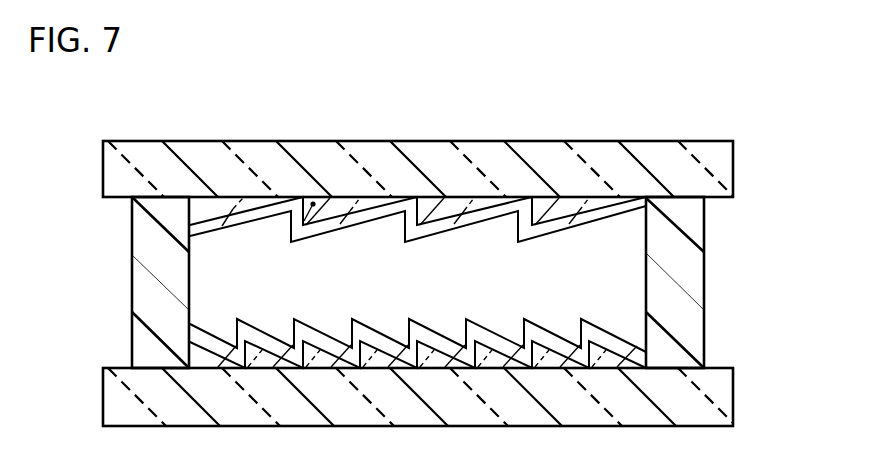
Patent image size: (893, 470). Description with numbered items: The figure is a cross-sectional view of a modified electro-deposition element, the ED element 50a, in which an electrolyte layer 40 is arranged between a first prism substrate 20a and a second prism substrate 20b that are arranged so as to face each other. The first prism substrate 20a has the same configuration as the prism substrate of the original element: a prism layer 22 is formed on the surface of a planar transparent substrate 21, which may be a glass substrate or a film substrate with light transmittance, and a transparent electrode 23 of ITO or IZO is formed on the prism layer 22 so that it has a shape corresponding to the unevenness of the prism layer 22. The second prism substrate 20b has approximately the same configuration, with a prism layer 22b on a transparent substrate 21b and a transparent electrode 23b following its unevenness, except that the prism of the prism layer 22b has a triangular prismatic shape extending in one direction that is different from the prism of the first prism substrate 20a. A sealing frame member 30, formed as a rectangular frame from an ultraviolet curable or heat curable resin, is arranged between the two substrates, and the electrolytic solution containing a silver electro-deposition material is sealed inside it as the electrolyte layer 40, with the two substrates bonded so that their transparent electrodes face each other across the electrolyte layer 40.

The first prism substrate 20a is at (473, 359).
The second prism substrate 20b is at (474, 178).
The transparent substrate 21 is at (454, 390).
The transparent substrate 21b is at (461, 161).
The prism layer 22 is at (418, 327).
The prism layer 22b is at (418, 234).
The transparent electrode 23 is at (418, 330).
The transparent electrode 23b is at (418, 234).
The sealing frame member 30 is at (417, 282).
The electrolyte layer 40 is at (628, 315).
The ED element 50a is at (808, 450).